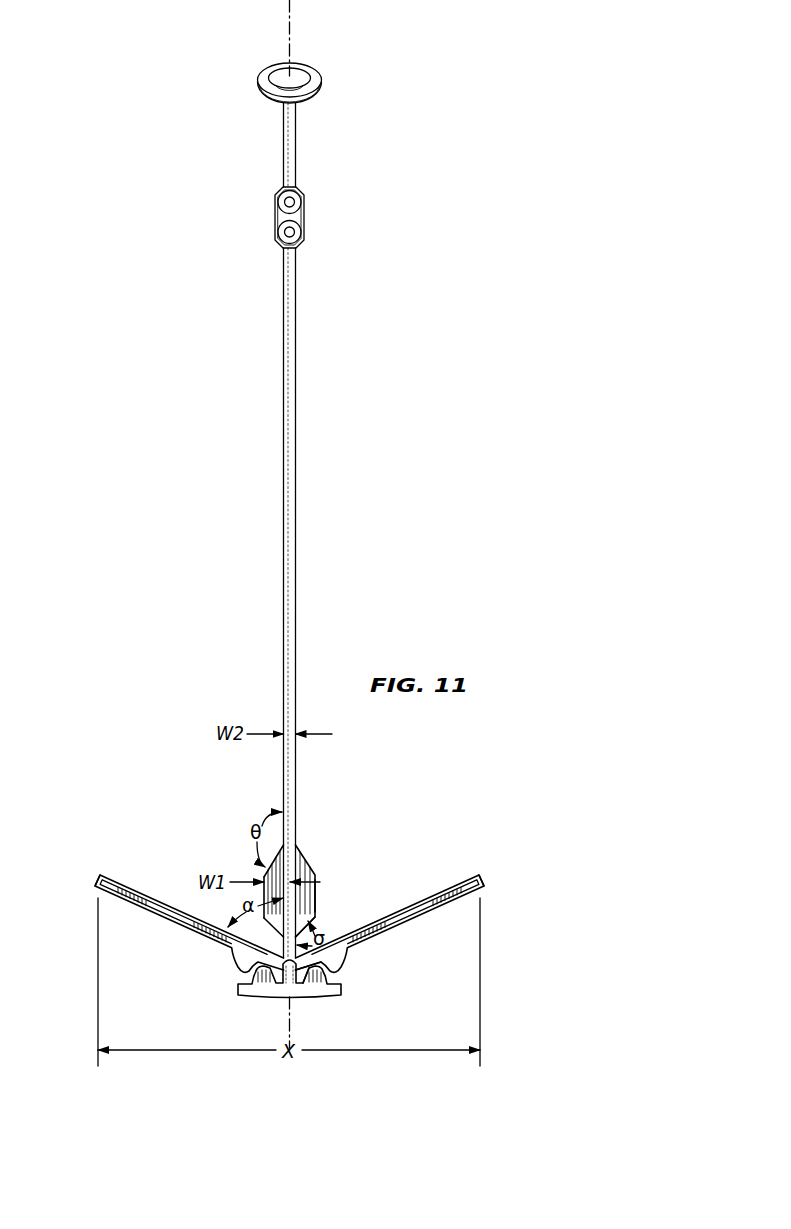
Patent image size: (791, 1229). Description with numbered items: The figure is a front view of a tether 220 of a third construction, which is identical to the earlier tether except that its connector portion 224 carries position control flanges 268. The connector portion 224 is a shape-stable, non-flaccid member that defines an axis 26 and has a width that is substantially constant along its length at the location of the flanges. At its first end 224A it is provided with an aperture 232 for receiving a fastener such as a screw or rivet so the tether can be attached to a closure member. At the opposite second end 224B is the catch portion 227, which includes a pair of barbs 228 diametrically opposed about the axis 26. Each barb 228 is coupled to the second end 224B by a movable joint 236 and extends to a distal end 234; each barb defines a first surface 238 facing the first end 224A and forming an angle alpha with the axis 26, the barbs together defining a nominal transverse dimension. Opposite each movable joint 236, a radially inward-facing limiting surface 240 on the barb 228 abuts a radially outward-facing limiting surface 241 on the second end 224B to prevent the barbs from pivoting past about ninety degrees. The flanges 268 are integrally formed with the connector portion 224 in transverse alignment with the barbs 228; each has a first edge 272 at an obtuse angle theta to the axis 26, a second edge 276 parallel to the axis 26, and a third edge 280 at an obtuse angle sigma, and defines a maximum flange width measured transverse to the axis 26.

The axis 26 is at (287, 44).
The tether 220 is at (424, 452).
The connector portion 224 is at (296, 575).
The first end 224A is at (339, 66).
The second end 224B is at (276, 997).
The aperture 232 is at (266, 101).
The catch portion 227 is at (193, 853).
The barbs 228 is at (175, 922).
The distal end 234 is at (99, 880).
The first surface 238 is at (170, 905).
The movable joint 236 is at (331, 941).
The flanges 268 is at (305, 872).
The first edge 272 is at (301, 862).
The second edge 276 is at (316, 900).
The third edge 280 is at (318, 924).
The limiting surface 240 is at (243, 979).
The limiting surface 241 is at (338, 979).